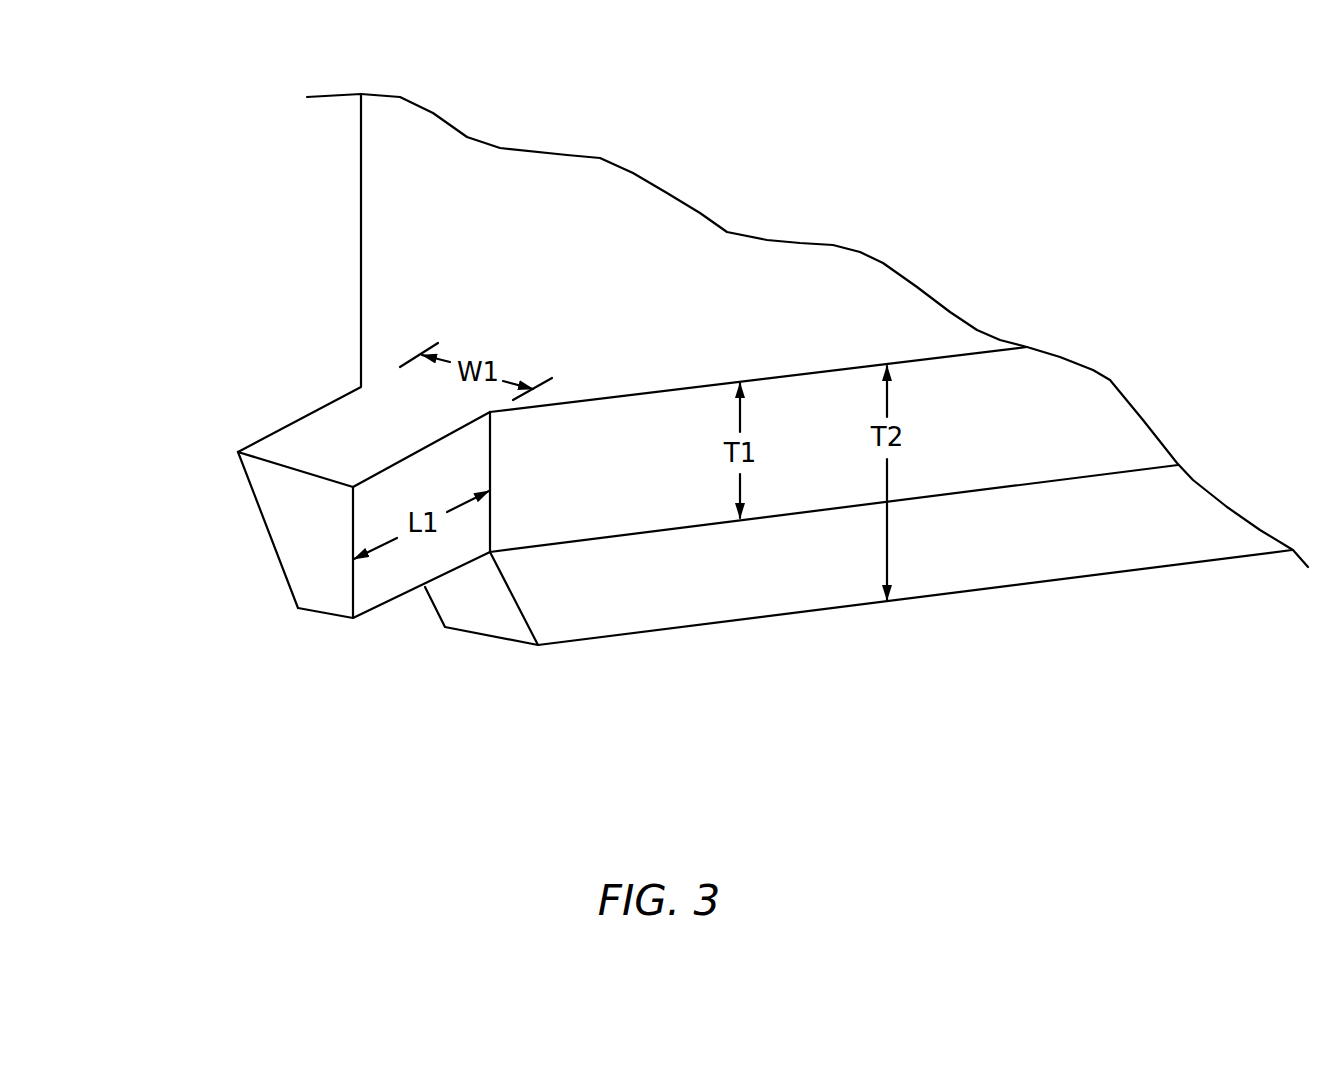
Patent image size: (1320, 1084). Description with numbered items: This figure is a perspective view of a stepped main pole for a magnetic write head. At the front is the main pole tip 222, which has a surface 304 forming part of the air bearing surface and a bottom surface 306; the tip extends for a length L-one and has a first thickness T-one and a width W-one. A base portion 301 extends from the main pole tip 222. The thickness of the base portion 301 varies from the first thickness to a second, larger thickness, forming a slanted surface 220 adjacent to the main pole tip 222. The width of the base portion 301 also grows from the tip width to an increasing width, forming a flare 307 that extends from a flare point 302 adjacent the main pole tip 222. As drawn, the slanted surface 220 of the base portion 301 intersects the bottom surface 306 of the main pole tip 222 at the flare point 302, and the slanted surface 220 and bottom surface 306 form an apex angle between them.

The flare 307 is at (358, 187).
The base portion 301 is at (539, 257).
The main pole tip 222 is at (338, 437).
The surface 304 is at (307, 542).
The bottom surface 306 is at (330, 632).
The slanted surface 220 is at (471, 605).
The flare point 302 is at (507, 558).